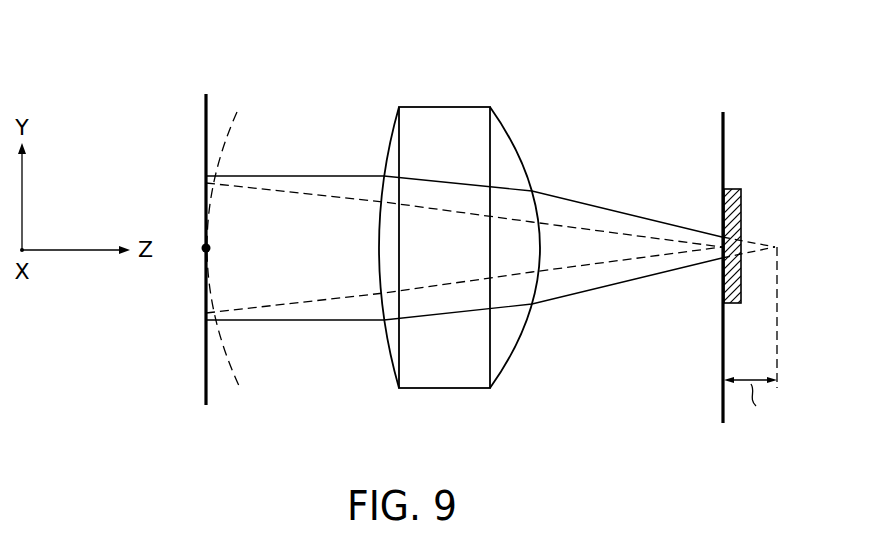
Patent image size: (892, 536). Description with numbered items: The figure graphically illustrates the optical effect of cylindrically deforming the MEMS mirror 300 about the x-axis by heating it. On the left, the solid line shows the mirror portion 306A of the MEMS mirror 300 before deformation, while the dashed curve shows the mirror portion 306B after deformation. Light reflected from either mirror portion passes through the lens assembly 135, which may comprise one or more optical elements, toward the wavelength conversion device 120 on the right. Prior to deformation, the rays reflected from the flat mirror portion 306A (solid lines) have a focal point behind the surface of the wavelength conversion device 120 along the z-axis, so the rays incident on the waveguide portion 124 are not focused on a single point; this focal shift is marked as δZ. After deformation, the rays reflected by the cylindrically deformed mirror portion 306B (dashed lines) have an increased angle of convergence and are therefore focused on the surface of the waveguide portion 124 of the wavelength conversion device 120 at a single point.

The MEMS mirror 300 is at (491, 219).
The mirror portion prior to deformation 306A is at (135, 225).
The mirror portion after deformation 306B is at (236, 113).
The lens assembly 135 is at (445, 107).
The wavelength conversion device 120 is at (723, 117).
The waveguide portion 124 is at (742, 202).